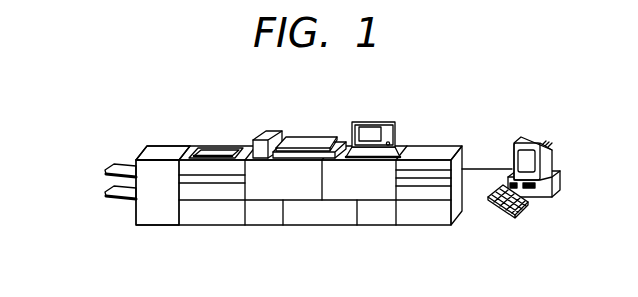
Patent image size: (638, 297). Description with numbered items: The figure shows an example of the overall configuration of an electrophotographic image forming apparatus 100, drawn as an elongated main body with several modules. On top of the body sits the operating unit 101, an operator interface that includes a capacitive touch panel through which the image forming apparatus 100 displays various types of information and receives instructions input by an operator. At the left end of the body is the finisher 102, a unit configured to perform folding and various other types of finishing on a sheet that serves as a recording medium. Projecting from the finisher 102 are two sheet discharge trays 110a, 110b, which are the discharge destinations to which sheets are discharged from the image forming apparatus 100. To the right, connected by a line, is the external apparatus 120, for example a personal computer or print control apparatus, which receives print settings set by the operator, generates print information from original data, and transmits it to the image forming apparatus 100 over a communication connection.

The image forming apparatus 100 is at (258, 143).
The operating unit 101 is at (370, 122).
The finisher 102 is at (162, 150).
The sheet discharge tray 110a is at (110, 165).
The sheet discharge tray 110b is at (110, 190).
The external apparatus 120 is at (544, 143).